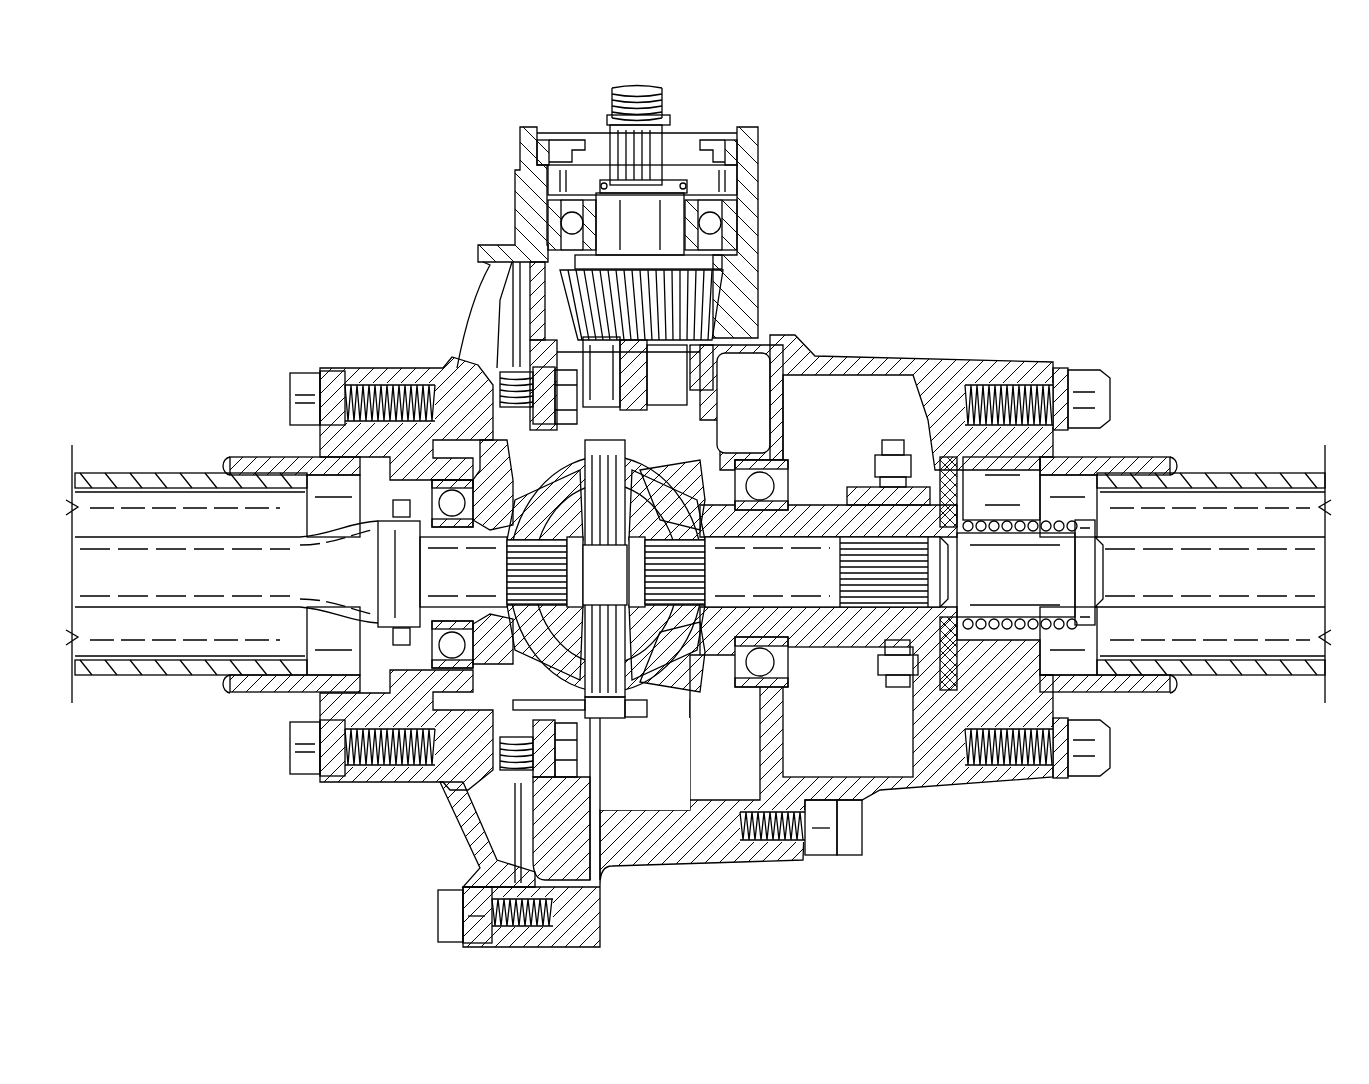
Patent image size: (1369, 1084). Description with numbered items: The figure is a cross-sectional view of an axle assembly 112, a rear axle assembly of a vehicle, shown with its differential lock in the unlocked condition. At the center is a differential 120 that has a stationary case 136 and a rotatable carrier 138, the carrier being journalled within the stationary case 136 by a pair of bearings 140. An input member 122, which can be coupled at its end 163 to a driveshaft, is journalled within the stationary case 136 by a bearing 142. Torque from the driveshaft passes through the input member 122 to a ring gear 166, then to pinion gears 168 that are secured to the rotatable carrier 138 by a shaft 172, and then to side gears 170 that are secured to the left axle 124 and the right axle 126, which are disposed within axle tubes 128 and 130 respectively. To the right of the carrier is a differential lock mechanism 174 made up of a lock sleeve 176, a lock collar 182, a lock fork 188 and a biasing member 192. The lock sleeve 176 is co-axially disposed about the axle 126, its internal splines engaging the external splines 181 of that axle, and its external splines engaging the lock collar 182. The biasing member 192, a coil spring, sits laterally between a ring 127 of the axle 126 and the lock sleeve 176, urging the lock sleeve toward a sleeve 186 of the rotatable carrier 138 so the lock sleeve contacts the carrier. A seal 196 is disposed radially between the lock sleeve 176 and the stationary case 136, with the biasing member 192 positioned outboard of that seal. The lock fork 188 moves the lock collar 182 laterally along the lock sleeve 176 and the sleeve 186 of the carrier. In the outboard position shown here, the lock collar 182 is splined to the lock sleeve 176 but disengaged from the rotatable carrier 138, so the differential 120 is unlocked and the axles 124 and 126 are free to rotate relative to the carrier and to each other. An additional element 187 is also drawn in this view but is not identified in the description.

The axle assembly 112 is at (1022, 186).
The differential 120 is at (943, 328).
The input member 122 is at (637, 155).
The axle 124 is at (225, 612).
The axle 126 is at (1213, 608).
The ring 127 is at (1085, 520).
The axle tube 128 is at (150, 473).
The axle tube 130 is at (1250, 475).
The stationary case 136 is at (765, 150).
The rotatable carrier 138 is at (706, 690).
The bearings 140 is at (395, 660).
The bearing 142 is at (728, 245).
The end 163 is at (660, 100).
The ring gear 166 is at (563, 305).
The pinion gears 168 is at (660, 462).
The side gears 170 is at (684, 573).
The shaft 172 is at (612, 718).
The differential lock mechanism 174 is at (893, 702).
The lock sleeve 176 is at (965, 527).
The external splines 181 is at (853, 578).
The lock collar 182 is at (863, 505).
The sleeve 186 is at (827, 505).
The fastener 187 is at (845, 645).
The lock fork 188 is at (890, 440).
The biasing member 192 is at (1018, 525).
The seal 196 is at (1010, 677).